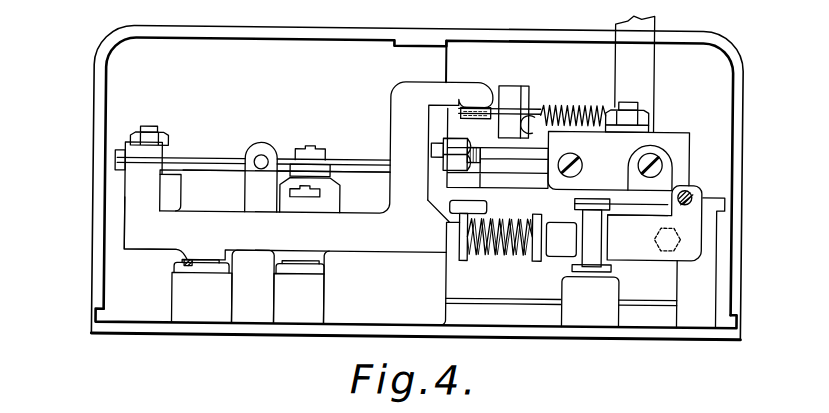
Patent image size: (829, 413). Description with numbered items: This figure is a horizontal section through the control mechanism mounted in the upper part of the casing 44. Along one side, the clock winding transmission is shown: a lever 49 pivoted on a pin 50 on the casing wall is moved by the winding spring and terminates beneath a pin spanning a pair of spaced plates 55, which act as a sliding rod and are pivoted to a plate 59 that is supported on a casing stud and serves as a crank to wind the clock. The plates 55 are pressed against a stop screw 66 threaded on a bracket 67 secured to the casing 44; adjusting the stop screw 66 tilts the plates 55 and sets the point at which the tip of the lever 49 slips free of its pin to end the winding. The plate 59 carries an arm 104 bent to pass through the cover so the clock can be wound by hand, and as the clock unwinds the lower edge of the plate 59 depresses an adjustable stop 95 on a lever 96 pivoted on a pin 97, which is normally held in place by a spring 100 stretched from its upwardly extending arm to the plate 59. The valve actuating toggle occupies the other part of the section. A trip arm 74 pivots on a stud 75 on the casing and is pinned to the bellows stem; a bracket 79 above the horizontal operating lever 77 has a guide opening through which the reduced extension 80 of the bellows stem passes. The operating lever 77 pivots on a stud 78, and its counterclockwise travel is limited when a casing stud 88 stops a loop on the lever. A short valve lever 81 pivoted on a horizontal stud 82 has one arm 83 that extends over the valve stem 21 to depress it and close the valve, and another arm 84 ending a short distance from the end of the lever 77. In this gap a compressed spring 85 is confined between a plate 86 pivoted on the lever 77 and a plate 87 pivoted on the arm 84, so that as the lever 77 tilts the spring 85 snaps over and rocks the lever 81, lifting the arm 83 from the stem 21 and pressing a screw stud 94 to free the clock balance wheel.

The casing 44 is at (96, 140).
The pin 50 is at (118, 265).
The operating lever 77 is at (186, 234).
The stud 88 is at (181, 265).
The stud 78 is at (322, 300).
The bracket 79 is at (252, 190).
The trip arm 74 is at (224, 157).
The reduced extension 80 is at (262, 157).
The stud 75 is at (323, 157).
The lever 49 is at (360, 167).
The bracket 67 is at (441, 60).
The stop screw 66 is at (473, 147).
The plates 55 is at (513, 177).
The plate 59 is at (550, 160).
The adjustable stop 95 is at (583, 173).
The arm 104 is at (620, 52).
The spring 100 is at (570, 112).
The pin 97 is at (632, 103).
The lever 96 is at (665, 138).
The valve stem 21 is at (690, 186).
The screw stud 94 is at (680, 236).
The stud 82 is at (608, 258).
The valve lever 81 is at (647, 247).
The arm 83 is at (692, 248).
The plate 86 is at (460, 250).
The spring 85 is at (482, 250).
The plate 87 is at (537, 258).
The arm 84 is at (557, 240).